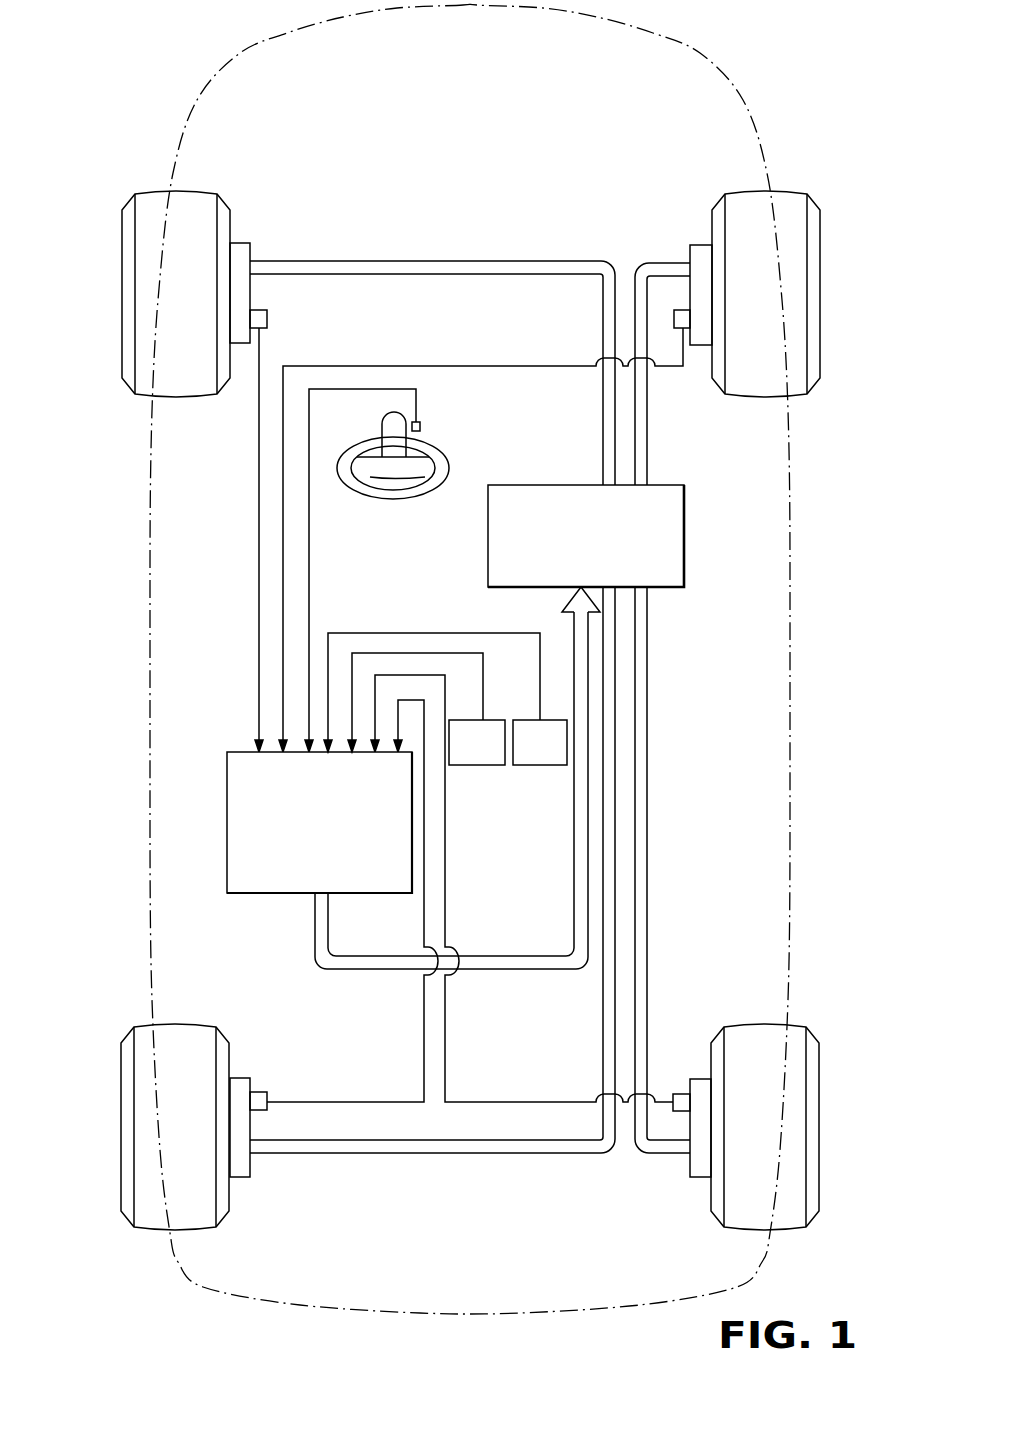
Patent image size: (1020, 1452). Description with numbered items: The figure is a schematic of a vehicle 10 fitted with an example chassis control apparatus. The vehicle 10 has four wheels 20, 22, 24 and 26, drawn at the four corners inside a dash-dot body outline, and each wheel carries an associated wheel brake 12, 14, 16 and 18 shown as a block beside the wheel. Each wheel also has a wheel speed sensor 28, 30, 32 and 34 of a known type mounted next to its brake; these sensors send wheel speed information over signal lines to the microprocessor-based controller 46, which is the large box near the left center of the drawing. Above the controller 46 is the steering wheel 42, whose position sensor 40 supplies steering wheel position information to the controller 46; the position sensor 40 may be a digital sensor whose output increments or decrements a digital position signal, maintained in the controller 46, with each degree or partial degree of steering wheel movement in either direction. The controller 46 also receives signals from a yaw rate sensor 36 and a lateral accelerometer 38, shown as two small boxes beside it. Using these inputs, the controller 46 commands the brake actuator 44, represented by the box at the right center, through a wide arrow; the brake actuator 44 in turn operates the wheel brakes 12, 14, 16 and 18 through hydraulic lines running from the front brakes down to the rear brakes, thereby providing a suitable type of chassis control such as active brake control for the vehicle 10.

The vehicle 10 is at (676, 37).
The wheel brake 12 is at (240, 250).
The wheel brake 14 is at (698, 250).
The wheel brake 16 is at (240, 1163).
The wheel brake 18 is at (695, 1170).
The wheel 20 is at (148, 200).
The wheel 22 is at (795, 205).
The wheel 24 is at (140, 1038).
The wheel 26 is at (797, 1040).
The wheel speed sensor 28 is at (268, 320).
The wheel speed sensor 30 is at (680, 318).
The wheel speed sensor 32 is at (258, 1092).
The wheel speed sensor 34 is at (676, 1094).
The yaw rate sensor 36 is at (480, 767).
The lateral accelerometer 38 is at (540, 767).
The position sensor 40 is at (421, 427).
The steering wheel 42 is at (393, 500).
The brake actuator 44 is at (673, 523).
The controller 46 is at (228, 757).